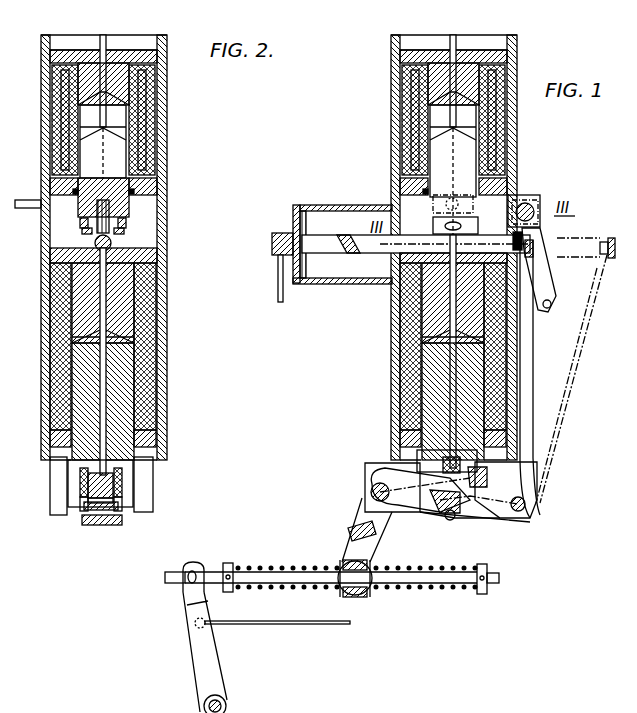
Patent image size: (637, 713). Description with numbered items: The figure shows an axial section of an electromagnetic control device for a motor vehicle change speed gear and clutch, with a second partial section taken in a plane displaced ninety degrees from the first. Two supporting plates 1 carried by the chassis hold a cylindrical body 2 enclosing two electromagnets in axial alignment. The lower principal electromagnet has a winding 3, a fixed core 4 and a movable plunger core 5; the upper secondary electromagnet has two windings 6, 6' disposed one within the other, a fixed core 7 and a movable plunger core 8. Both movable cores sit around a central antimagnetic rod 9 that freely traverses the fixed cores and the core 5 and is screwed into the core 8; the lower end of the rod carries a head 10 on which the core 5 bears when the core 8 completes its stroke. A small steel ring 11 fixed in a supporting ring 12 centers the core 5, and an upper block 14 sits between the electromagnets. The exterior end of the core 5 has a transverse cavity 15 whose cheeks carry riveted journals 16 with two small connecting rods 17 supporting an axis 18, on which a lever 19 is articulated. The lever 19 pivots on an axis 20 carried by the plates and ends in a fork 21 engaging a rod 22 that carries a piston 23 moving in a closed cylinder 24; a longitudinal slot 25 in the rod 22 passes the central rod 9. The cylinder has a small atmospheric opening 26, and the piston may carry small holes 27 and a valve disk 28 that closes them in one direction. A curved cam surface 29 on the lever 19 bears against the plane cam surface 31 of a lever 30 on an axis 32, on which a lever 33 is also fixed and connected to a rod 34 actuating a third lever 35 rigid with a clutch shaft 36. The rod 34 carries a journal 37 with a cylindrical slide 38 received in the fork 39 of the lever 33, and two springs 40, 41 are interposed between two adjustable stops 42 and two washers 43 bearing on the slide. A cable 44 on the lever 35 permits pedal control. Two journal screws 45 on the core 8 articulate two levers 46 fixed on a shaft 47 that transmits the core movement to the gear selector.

In FIG. 2, the supporting plates 1 is at (50, 498).
In FIG. 1, the supporting plates 1 is at (535, 519).
In FIG. 2, the casing 2 is at (167, 82).
In FIG. 1, the casing 2 is at (518, 74).
In FIG. 2, the winding 3 is at (150, 338).
In FIG. 1, the winding 3 is at (415, 345).
In FIG. 2, the fixed core 4 is at (120, 284).
In FIG. 1, the fixed core 4 is at (430, 317).
In FIG. 2, the movable plunger core 5 is at (120, 373).
In FIG. 1, the movable plunger core 5 is at (430, 390).
In FIG. 2, the winding 6 is at (124, 256).
In FIG. 1, the winding 6 is at (432, 120).
In FIG. 2, the winding 6' is at (127, 120).
In FIG. 1, the winding 6' is at (427, 120).
In FIG. 2, the fixed core 7 is at (112, 58).
In FIG. 1, the fixed core 7 is at (464, 58).
In FIG. 2, the movable plunger core 8 is at (103, 120).
In FIG. 1, the movable plunger core 8 is at (453, 149).
In FIG. 2, the central rod 9 is at (106, 305).
In FIG. 1, the central rod 9 is at (455, 363).
In FIG. 2, the head 10 is at (118, 505).
In FIG. 1, the head 10 is at (470, 487).
In FIG. 1, the steel ring 11 is at (402, 438).
In FIG. 1, the supporting ring 12 is at (402, 430).
In FIG. 2, the core block 14 is at (156, 184).
In FIG. 1, the core block 14 is at (515, 173).
In FIG. 2, the transverse cavity 15 is at (115, 465).
In FIG. 1, the transverse cavity 15 is at (481, 470).
In FIG. 2, the journals 16 is at (80, 478).
In FIG. 1, the journals 16 is at (425, 500).
In FIG. 2, the connecting rods 17 is at (82, 499).
In FIG. 1, the connecting rods 17 is at (440, 510).
In FIG. 2, the axis 18 is at (86, 512).
In FIG. 1, the axis 18 is at (451, 520).
In FIG. 2, the lever 19 is at (100, 526).
In FIG. 1, the lever 19 is at (532, 385).
In FIG. 1, the axis 20 is at (526, 504).
In FIG. 1, the fork 21 is at (540, 262).
In FIG. 2, the rod 22 is at (112, 244).
In FIG. 1, the rod 22 is at (339, 253).
In FIG. 1, the piston 23 is at (315, 207).
In FIG. 1, the closed cylinder 24 is at (345, 284).
In FIG. 1, the longitudinal slot 25 is at (383, 253).
In FIG. 1, the opening 26 is at (272, 240).
In FIG. 1, the holes 27 is at (297, 283).
In FIG. 1, the valve disk 28 is at (298, 218).
In FIG. 1, the curved cam surface 29 is at (460, 506).
In FIG. 2, the lever 30 is at (98, 499).
In FIG. 1, the lever 30 is at (420, 472).
In FIG. 1, the plane cam surface 31 is at (470, 506).
In FIG. 1, the axis 32 is at (372, 487).
In FIG. 1, the lever 33 is at (362, 511).
In FIG. 1, the rod 34 is at (500, 580).
In FIG. 1, the lever 35 is at (192, 660).
In FIG. 1, the shaft 36 is at (226, 705).
In FIG. 1, the journal 37 is at (358, 598).
In FIG. 1, the cylindrical slide 38 is at (343, 565).
In FIG. 1, the fork 39 is at (352, 538).
In FIG. 1, the spring 40 is at (455, 590).
In FIG. 1, the spring 41 is at (258, 566).
In FIG. 1, the adjustable stops 42 is at (229, 563).
In FIG. 1, the washers 43 is at (345, 598).
In FIG. 1, the cable 44 is at (298, 625).
In FIG. 2, the journal screws 45 is at (83, 231).
In FIG. 1, the journal screws 45 is at (456, 224).
In FIG. 2, the levers 46 is at (82, 221).
In FIG. 1, the levers 46 is at (480, 200).
In FIG. 2, the shaft 47 is at (29, 201).
In FIG. 1, the shaft 47 is at (527, 208).